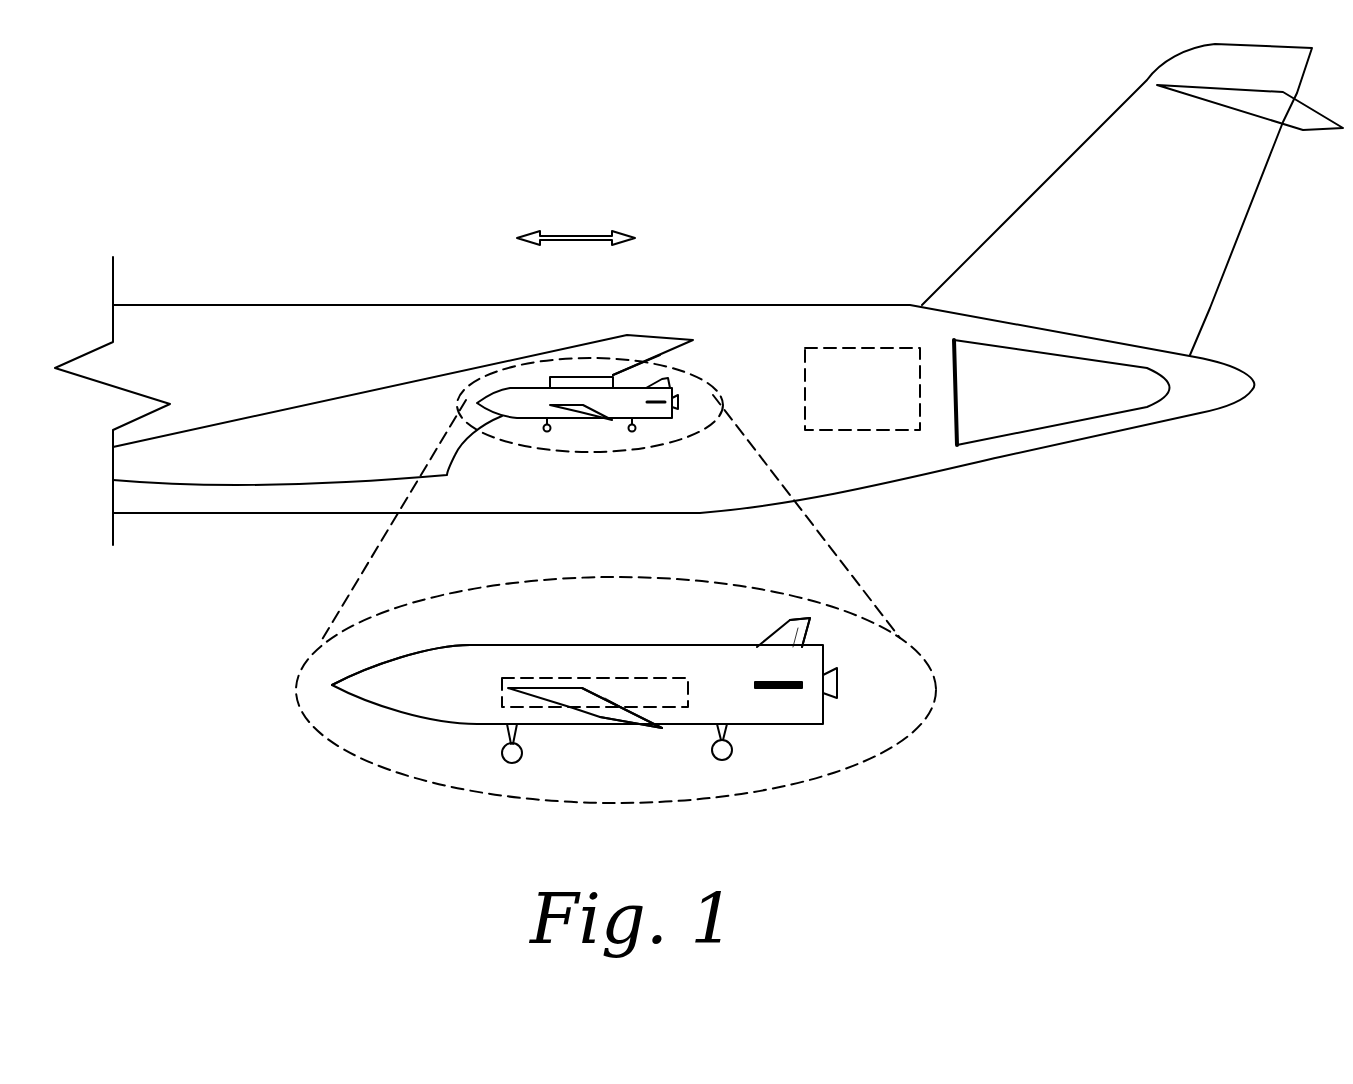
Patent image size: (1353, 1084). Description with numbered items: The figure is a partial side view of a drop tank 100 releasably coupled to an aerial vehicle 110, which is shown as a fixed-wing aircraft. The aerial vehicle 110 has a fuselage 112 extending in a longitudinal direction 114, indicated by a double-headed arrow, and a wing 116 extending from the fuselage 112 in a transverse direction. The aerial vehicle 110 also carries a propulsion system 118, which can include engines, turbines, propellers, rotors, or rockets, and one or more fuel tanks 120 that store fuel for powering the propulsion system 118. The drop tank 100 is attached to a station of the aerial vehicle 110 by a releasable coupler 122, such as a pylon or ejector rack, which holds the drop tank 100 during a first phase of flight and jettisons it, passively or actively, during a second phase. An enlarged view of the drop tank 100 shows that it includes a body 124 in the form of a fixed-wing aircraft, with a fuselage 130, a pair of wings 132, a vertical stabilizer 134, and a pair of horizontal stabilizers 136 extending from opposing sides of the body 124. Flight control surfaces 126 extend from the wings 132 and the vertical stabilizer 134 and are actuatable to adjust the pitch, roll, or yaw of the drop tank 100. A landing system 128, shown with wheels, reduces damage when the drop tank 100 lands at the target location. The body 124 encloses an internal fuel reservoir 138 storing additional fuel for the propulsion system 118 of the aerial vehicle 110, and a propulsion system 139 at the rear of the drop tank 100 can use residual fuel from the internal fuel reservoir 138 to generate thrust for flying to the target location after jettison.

The drop tank 100 is at (611, 422).
The aerial vehicle 110 is at (892, 230).
The fuselage 112 is at (223, 312).
The longitudinal direction 114 is at (552, 235).
The wing 116 is at (228, 477).
The propulsion system 118 is at (1052, 430).
The fuel tank 120 is at (890, 430).
The releasable coupler 122 is at (616, 377).
The body 124 is at (510, 642).
The flight control surfaces 126 is at (805, 642).
The landing system 128 is at (500, 752).
The fuselage 130 is at (640, 645).
The wings 132 is at (572, 703).
The vertical stabilizer 134 is at (773, 635).
The horizontal stabilizers 136 is at (773, 688).
The internal fuel reservoir 138 is at (603, 675).
The propulsion system 139 is at (838, 680).